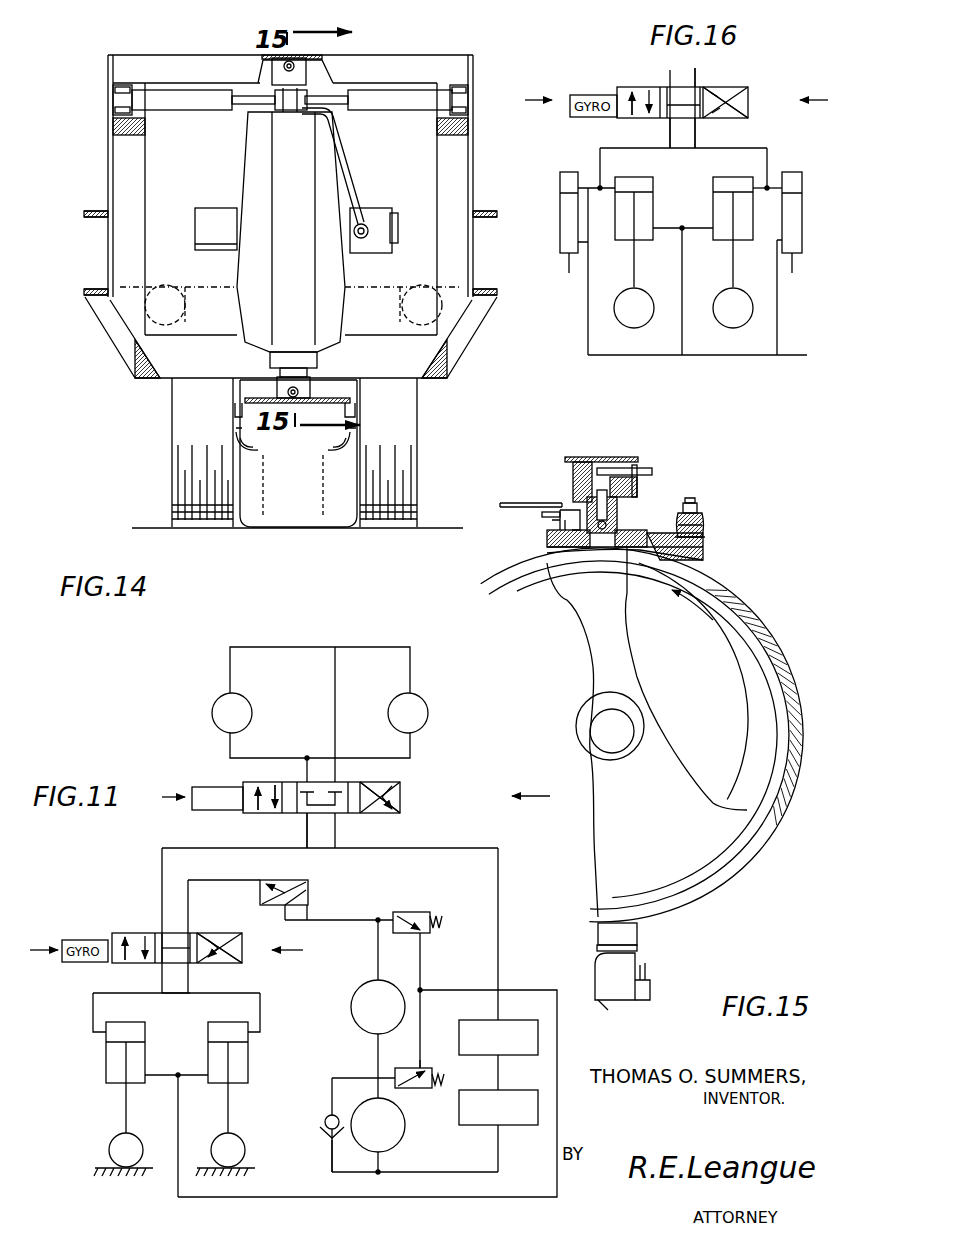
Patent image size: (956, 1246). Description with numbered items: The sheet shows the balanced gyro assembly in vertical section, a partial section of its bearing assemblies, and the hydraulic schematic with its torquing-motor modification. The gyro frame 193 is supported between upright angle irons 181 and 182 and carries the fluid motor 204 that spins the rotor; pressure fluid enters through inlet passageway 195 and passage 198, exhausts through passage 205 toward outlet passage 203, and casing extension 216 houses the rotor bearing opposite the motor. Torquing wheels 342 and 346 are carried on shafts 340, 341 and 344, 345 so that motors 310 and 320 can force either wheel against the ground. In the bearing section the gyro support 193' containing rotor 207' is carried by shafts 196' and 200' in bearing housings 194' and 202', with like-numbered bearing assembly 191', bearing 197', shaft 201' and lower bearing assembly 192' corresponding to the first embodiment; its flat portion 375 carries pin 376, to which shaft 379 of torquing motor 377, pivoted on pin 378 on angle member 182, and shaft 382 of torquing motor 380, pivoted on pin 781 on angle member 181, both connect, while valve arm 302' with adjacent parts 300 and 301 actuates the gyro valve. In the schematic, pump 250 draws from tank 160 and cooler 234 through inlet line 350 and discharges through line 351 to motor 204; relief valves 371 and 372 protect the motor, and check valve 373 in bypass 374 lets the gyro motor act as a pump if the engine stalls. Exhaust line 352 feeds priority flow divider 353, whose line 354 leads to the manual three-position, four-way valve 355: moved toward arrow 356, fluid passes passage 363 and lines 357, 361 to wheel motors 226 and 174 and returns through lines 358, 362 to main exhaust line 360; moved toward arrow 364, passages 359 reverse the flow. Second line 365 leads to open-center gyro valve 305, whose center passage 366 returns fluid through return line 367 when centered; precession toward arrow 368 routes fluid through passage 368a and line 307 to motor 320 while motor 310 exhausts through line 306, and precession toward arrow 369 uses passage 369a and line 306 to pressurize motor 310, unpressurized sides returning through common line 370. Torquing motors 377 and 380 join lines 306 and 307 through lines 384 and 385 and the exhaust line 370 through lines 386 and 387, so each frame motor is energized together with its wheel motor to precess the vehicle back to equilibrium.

In FIG. 14, the vertical angle iron 181 is at (125, 66).
In FIG. 14, the vertical angle iron 182 is at (474, 80).
In FIG. 14, the frame torquing motor 380 is at (188, 92).
In FIG. 16, the frame torquing motor 380 is at (802, 193).
In FIG. 14, the first frame torquing motor 377 is at (400, 93).
In FIG. 16, the first frame torquing motor 377 is at (560, 188).
In FIG. 14, the fluid inlet passageway 195 is at (291, 62).
In FIG. 15, the fluid inlet passageway 195 is at (645, 467).
In FIG. 14, the shaft of motor 377 379 is at (338, 100).
In FIG. 14, the shaft of motor 380 382 is at (250, 102).
In FIG. 14, the left end fitting 781 is at (115, 102).
In FIG. 14, the pin 378 is at (432, 122).
In FIG. 14, the passage 198 is at (352, 175).
In FIG. 15, the passage 198 is at (627, 560).
In FIG. 11, the passage 198 is at (377, 1053).
In FIG. 14, the casing extension 216 is at (202, 223).
In FIG. 15, the casing extension 216 is at (640, 758).
In FIG. 14, the fluid motor 204 is at (380, 210).
In FIG. 11, the fluid motor 204 is at (360, 1012).
In FIG. 14, the gyro frame 193 is at (247, 244).
In FIG. 15, the gyro frame 193 is at (642, 735).
In FIG. 14, the fluid outlet passage 203 is at (300, 392).
In FIG. 15, the fluid outlet passage 203 is at (650, 982).
In FIG. 14, the first torquing wheel 342 is at (193, 460).
In FIG. 11, the first torquing wheel 342 is at (243, 1153).
In FIG. 14, the torquing wheel 346 is at (408, 456).
In FIG. 11, the torquing wheel 346 is at (140, 1170).
In FIG. 14, the shaft 340 is at (256, 437).
In FIG. 14, the shaft 341 is at (240, 448).
In FIG. 14, the second shaft 344 is at (330, 444).
In FIG. 14, the shaft 345 is at (347, 450).
In FIG. 16, the valve passage 369a is at (650, 92).
In FIG. 11, the valve passage 369a is at (140, 956).
In FIG. 16, the return line 367 is at (670, 75).
In FIG. 11, the return line 367 is at (160, 856).
In FIG. 16, the second line 365 is at (697, 70).
In FIG. 11, the second line 365 is at (218, 881).
In FIG. 16, the valve passage 368a is at (722, 100).
In FIG. 11, the valve passage 368a is at (240, 930).
In FIG. 16, the arrow 368 is at (822, 103).
In FIG. 11, the arrow 368 is at (300, 955).
In FIG. 16, the valve passages 359 is at (530, 97).
In FIG. 11, the valve passages 359 is at (386, 794).
In FIG. 16, the line 307 is at (666, 130).
In FIG. 11, the line 307 is at (128, 995).
In FIG. 16, the line 306 is at (700, 138).
In FIG. 11, the line 306 is at (246, 992).
In FIG. 16, the line 384 is at (590, 182).
In FIG. 16, the line 385 is at (778, 176).
In FIG. 16, the motor 320 is at (655, 238).
In FIG. 11, the motor 320 is at (104, 1065).
In FIG. 16, the motor 310 is at (722, 240).
In FIG. 11, the motor 310 is at (250, 1062).
In FIG. 16, the line 387 is at (588, 338).
In FIG. 16, the line 386 is at (778, 338).
In FIG. 16, the common line 370 is at (785, 356).
In FIG. 11, the common line 370 is at (404, 1198).
In FIG. 15, the bearing support column 191' is at (580, 457).
In FIG. 15, the bearing housing 194' is at (602, 441).
In FIG. 15, the bearing bushing 197' is at (665, 478).
In FIG. 15, the shaft 196' is at (635, 511).
In FIG. 15, the contact plate 302' is at (531, 482).
In FIG. 15, the contact 301 is at (557, 512).
In FIG. 15, the contact bracket 300 is at (550, 527).
In FIG. 15, the pin 376 is at (694, 502).
In FIG. 15, the flat portion 375 is at (700, 535).
In FIG. 15, the gyro frame 193' is at (642, 735).
In FIG. 15, the gyro rotor 207' is at (731, 681).
In FIG. 15, the lower bearing block 201' is at (651, 928).
In FIG. 15, the shaft 200' is at (651, 948).
In FIG. 15, the lower support 192' is at (599, 1009).
In FIG. 15, the bearing housing 202' is at (628, 992).
In FIG. 11, the line 358 is at (290, 647).
In FIG. 11, the line 362 is at (380, 647).
In FIG. 11, the motor 226 is at (213, 722).
In FIG. 11, the motor 174 is at (428, 722).
In FIG. 11, the line 357 is at (267, 760).
In FIG. 11, the line 361 is at (346, 760).
In FIG. 11, the arrow 356 is at (167, 795).
In FIG. 11, the arrow 364 is at (532, 796).
In FIG. 11, the three-position, four-way valve 355 is at (403, 799).
In FIG. 11, the valve passage 363 is at (278, 808).
In FIG. 11, the main exhaust line 360 is at (462, 847).
In FIG. 11, the line 354 is at (308, 870).
In FIG. 11, the priority type flow divider 353 is at (308, 892).
In FIG. 11, the relief valve 372 is at (425, 912).
In FIG. 11, the gyro controlled valve 305 is at (127, 934).
In FIG. 11, the arrow 369 is at (35, 946).
In FIG. 11, the line 352 is at (348, 923).
In FIG. 11, the center passage 366 is at (184, 1004).
In FIG. 11, the passage 205 is at (380, 957).
In FIG. 11, the relief valve 371 is at (422, 1067).
In FIG. 11, the oil tank 160 is at (538, 1040).
In FIG. 11, the check valve 373 is at (322, 1122).
In FIG. 11, the line 351 is at (385, 1090).
In FIG. 11, the oil cooler tank 234 is at (538, 1108).
In FIG. 11, the bypass 374 is at (333, 1142).
In FIG. 11, the hydraulic pump 250 is at (405, 1140).
In FIG. 11, the fluid inlet line 350 is at (500, 1166).